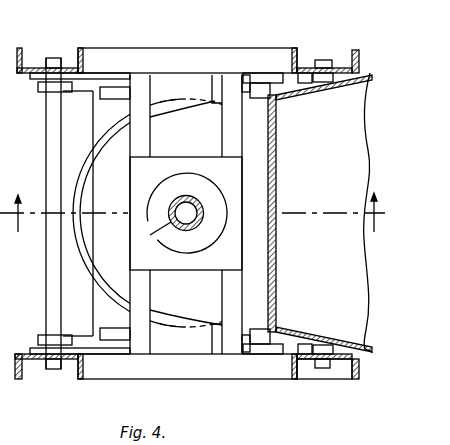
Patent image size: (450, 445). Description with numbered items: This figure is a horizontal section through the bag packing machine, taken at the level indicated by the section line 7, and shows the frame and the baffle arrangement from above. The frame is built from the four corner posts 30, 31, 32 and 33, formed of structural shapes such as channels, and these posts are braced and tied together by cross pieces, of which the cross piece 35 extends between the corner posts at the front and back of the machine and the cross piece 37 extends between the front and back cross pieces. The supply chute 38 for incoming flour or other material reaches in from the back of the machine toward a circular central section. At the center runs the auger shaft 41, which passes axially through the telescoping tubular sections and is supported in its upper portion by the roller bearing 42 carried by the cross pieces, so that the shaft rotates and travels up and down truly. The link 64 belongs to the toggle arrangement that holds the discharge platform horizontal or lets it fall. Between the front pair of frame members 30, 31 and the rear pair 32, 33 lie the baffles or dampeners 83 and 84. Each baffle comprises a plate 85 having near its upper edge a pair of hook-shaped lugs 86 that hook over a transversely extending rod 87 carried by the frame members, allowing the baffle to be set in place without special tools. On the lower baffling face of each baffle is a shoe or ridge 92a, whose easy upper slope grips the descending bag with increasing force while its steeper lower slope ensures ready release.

The section line 7- 7 is at (192, 214).
The corner post 30 is at (28, 68).
The corner post 31 is at (17, 380).
The corner post 32 is at (353, 380).
The corner post 33 is at (354, 57).
The cross piece 35 is at (227, 38).
The cross piece 37 is at (232, 338).
The supply chute 38 is at (320, 213).
The auger shaft 41 is at (150, 235).
The roller bearing 42 is at (163, 197).
The link 64 is at (240, 340).
The baffle or dampener 83 is at (90, 309).
The baffle or dampener 84 is at (286, 359).
The plate 85 is at (282, 80).
The hook-shaped lug 86 is at (40, 88).
The transversely extending rod 87 is at (53, 142).
The shoe or ridge 92a is at (278, 40).